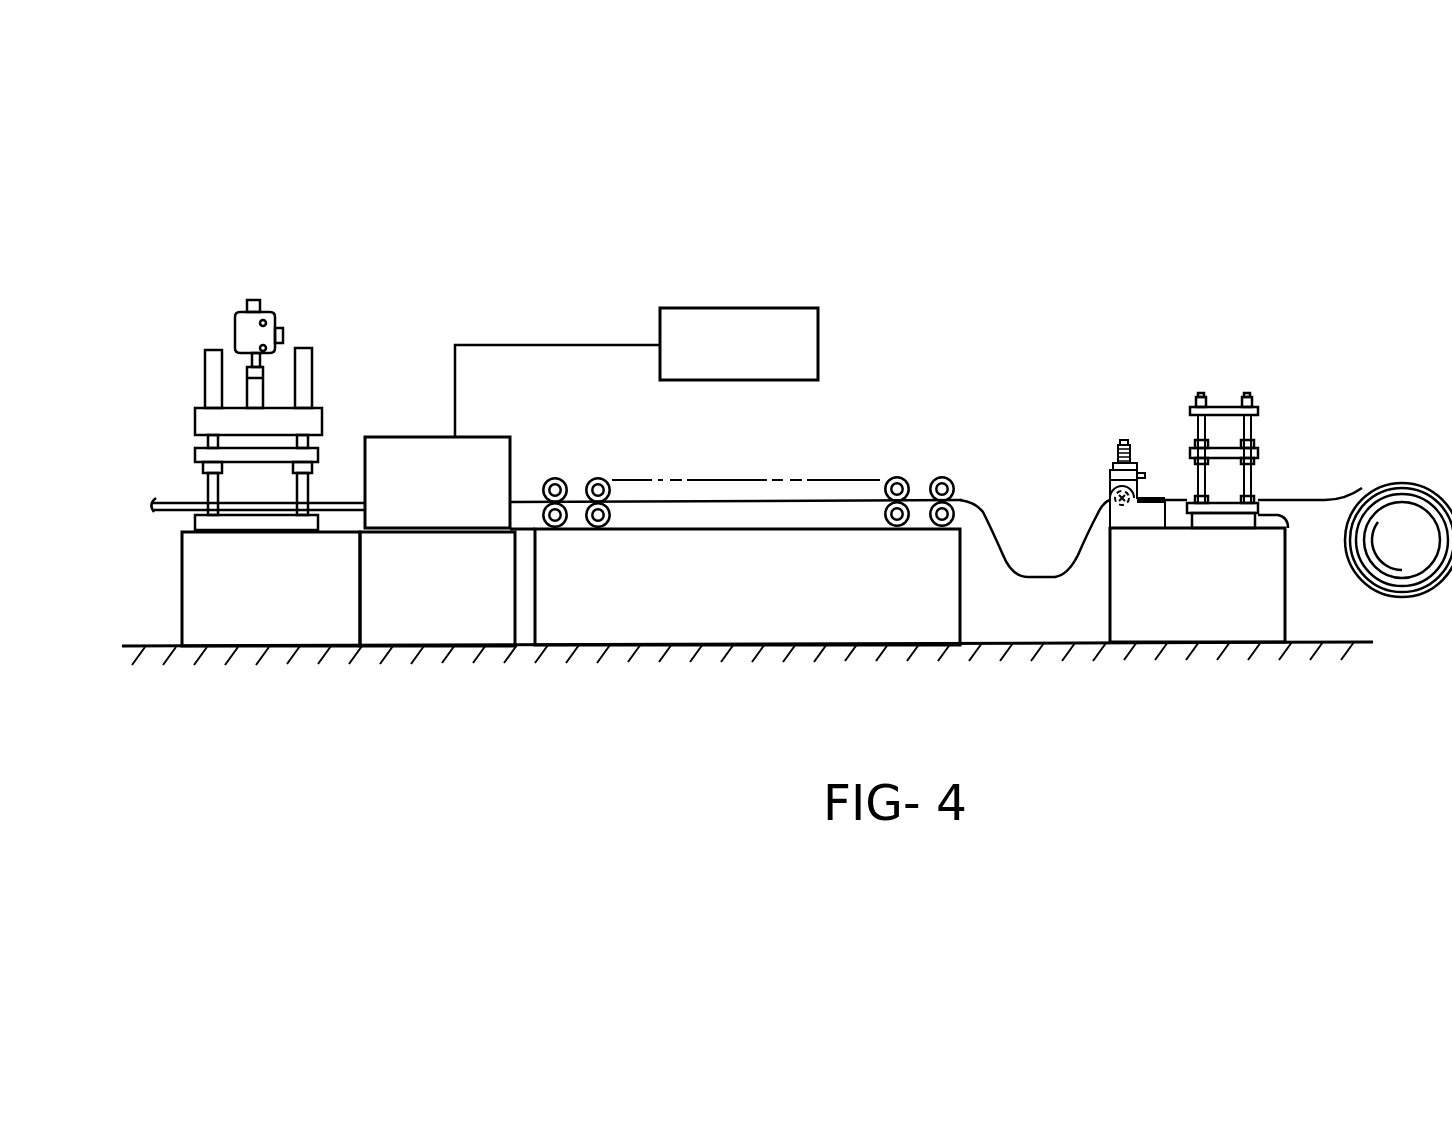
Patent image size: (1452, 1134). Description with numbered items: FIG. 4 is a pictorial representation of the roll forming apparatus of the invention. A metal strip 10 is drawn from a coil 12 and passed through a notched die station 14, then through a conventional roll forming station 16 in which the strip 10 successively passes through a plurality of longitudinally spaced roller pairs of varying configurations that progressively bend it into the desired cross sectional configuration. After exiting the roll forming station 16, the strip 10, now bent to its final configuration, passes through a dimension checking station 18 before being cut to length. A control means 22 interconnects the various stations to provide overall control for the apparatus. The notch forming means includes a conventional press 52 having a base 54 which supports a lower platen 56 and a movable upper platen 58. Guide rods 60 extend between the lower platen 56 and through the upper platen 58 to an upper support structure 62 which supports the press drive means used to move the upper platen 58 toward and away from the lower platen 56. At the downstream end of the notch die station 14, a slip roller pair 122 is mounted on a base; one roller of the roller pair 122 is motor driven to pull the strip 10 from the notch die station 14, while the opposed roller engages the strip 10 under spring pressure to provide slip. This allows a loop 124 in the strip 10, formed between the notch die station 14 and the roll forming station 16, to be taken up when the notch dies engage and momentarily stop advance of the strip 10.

The metal strip 10 is at (1329, 500).
The coil 12 is at (1408, 570).
The notched die station 14 is at (1221, 421).
The roll forming station 16 is at (792, 628).
The dimension checking station 18 is at (437, 526).
The control means 22 is at (663, 310).
The press 52 is at (1255, 428).
The base 54 is at (1245, 528).
The lower platen 56 is at (1282, 518).
The upper platen 58 is at (1260, 450).
The guide rods 60 is at (1197, 480).
The upper support structure 62 is at (1193, 407).
The slip roller pair 122 is at (1118, 452).
The loop 124 is at (1048, 580).